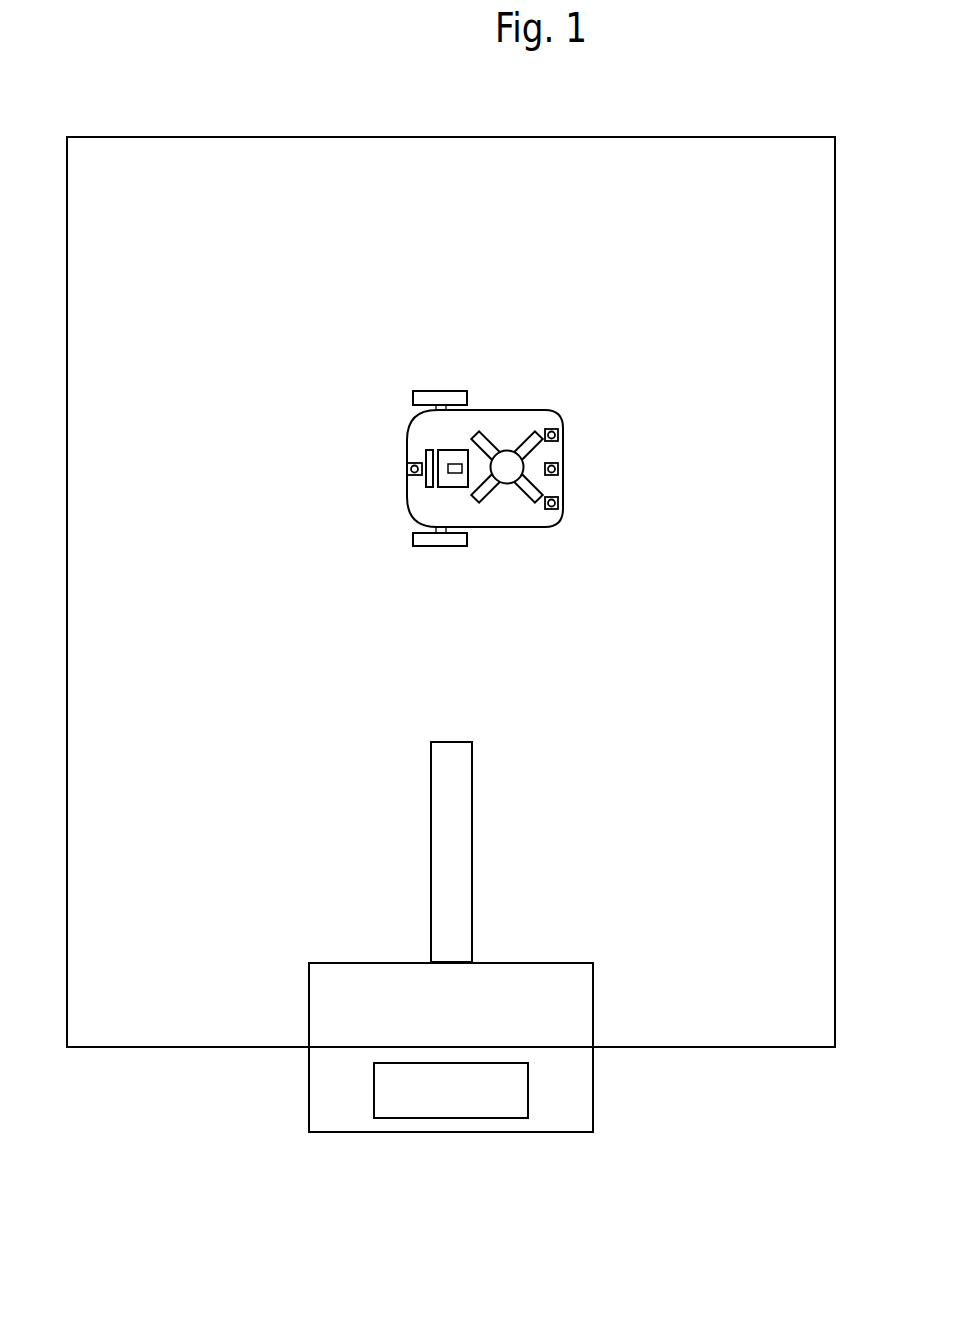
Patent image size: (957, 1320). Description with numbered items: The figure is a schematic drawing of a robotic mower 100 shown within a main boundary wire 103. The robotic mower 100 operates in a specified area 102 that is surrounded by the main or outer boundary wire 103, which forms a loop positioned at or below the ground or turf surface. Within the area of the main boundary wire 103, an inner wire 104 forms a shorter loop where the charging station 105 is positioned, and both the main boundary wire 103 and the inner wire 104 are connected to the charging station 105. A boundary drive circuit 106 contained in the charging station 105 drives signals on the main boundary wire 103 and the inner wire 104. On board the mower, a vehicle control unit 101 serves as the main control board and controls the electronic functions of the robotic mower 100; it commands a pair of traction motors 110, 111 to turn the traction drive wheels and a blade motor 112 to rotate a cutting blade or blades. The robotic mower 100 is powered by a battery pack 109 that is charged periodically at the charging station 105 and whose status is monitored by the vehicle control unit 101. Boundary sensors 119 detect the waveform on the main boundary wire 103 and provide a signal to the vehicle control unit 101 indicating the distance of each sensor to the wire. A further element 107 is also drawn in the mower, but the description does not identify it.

The robotic mower 100 is at (564, 360).
The vehicle control unit 101 is at (440, 450).
The specified area 102 is at (696, 973).
The main boundary wire 103 is at (209, 137).
The inner wire 104 is at (472, 790).
The charging station 105 is at (331, 1132).
The boundary drive circuit 106 is at (470, 1118).
The sensor module 107 is at (453, 474).
The battery pack 109 is at (427, 452).
The traction motor 110 is at (427, 409).
The traction motor 111 is at (427, 527).
The blade motor 112 is at (512, 484).
The boundary sensor 119 is at (408, 470).